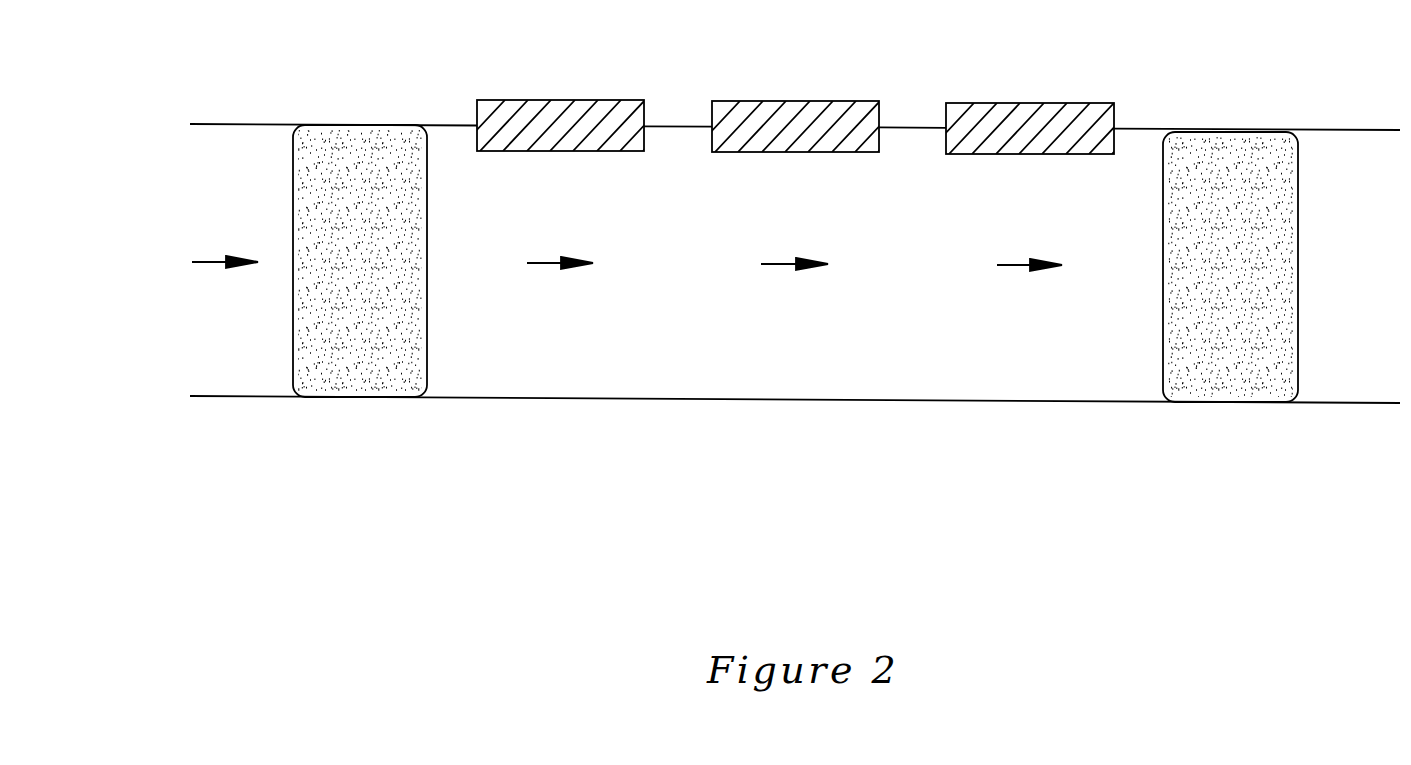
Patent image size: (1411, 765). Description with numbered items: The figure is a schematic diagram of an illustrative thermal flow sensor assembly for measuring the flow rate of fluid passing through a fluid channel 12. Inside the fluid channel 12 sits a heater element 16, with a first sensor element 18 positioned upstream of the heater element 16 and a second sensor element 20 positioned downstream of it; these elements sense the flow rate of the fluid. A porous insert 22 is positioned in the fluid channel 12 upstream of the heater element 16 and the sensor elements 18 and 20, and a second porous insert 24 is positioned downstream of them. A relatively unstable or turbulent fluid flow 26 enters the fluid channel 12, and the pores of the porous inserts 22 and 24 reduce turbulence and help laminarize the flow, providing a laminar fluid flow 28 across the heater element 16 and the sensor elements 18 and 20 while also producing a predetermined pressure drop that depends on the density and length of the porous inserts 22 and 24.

The fluid channel 12 is at (462, 158).
The heater element 16 is at (795, 101).
The first sensor element 18 is at (559, 100).
The second sensor element 20 is at (1029, 103).
The porous insert 22 is at (343, 137).
The porous insert 24 is at (1233, 140).
The turbulent fluid flow 26 is at (204, 264).
The laminar fluid flow 28 is at (539, 265).